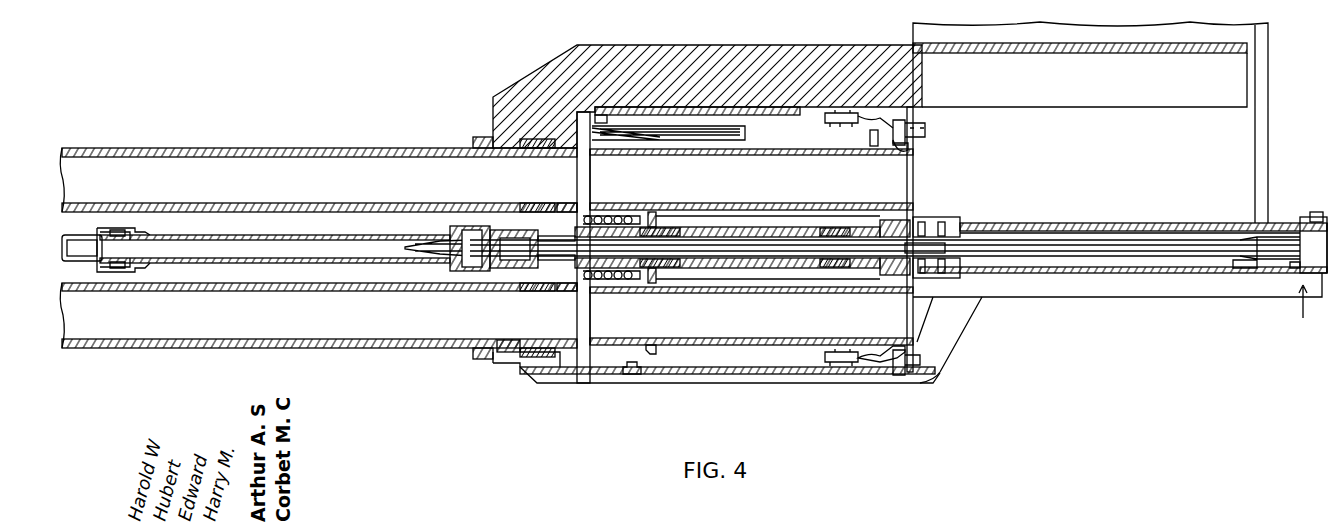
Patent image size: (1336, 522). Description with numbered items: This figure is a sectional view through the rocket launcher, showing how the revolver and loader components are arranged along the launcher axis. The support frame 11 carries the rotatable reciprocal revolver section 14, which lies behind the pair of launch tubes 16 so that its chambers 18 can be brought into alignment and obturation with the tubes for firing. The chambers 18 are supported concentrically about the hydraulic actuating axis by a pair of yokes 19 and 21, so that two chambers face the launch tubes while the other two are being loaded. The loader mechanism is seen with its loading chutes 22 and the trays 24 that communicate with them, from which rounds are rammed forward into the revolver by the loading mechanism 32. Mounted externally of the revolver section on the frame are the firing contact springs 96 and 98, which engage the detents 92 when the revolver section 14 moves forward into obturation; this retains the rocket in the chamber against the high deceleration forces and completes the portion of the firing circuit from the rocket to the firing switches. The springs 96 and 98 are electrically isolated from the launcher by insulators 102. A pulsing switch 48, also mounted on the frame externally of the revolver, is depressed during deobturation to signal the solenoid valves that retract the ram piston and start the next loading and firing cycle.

The support frame 11 is at (521, 82).
The rotatable reciprocal revolver section 14 is at (716, 401).
The launch tubes 16 is at (395, 167).
The chambers 18 is at (773, 185).
The yoke 19 is at (653, 347).
The yoke 21 is at (866, 144).
The loading chutes 22 is at (1248, 143).
The trays 24 is at (1170, 290).
The loading mechanism 32 is at (1304, 311).
The pulsing switch 48 is at (632, 375).
The detents 92 is at (893, 133).
The firing contact spring 96 is at (908, 152).
The firing contact spring 98 is at (897, 364).
The insulators 102 is at (836, 120).